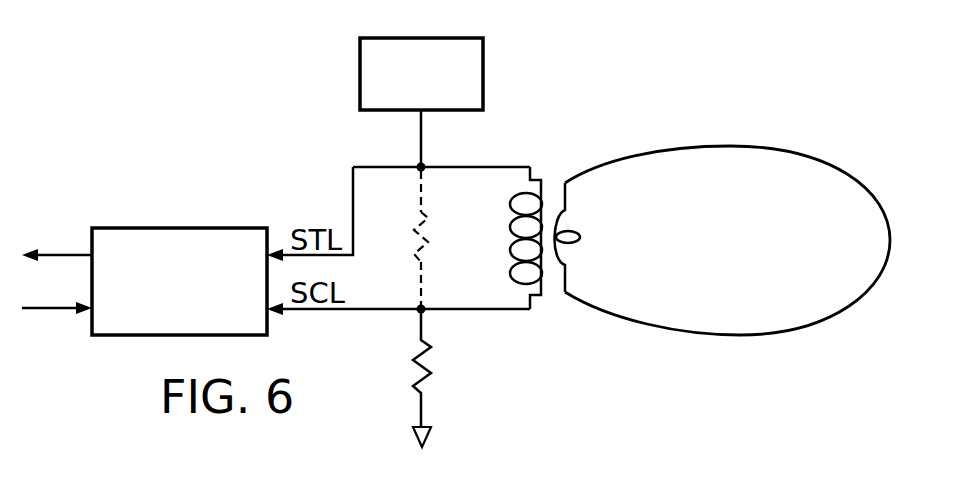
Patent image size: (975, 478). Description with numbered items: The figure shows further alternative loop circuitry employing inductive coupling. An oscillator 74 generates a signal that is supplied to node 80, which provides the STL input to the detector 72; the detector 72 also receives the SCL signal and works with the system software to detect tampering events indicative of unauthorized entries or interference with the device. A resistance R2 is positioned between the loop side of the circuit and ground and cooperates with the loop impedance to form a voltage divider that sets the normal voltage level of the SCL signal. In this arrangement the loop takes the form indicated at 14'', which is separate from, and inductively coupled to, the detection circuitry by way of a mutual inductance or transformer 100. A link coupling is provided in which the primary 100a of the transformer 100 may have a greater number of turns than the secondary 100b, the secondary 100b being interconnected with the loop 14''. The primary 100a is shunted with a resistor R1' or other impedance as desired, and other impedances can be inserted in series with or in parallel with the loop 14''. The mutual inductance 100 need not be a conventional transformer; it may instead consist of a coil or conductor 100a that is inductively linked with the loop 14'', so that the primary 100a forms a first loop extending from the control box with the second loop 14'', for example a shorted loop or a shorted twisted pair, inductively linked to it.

The oscillator 74 is at (483, 80).
The node 80 is at (419, 168).
The detector 72 is at (197, 312).
The resistor R1' is at (452, 238).
The resistance R2 is at (428, 365).
The transformer 100 is at (564, 216).
The primary 100a is at (507, 232).
The secondary 100b is at (575, 224).
The loop 14'' is at (727, 267).